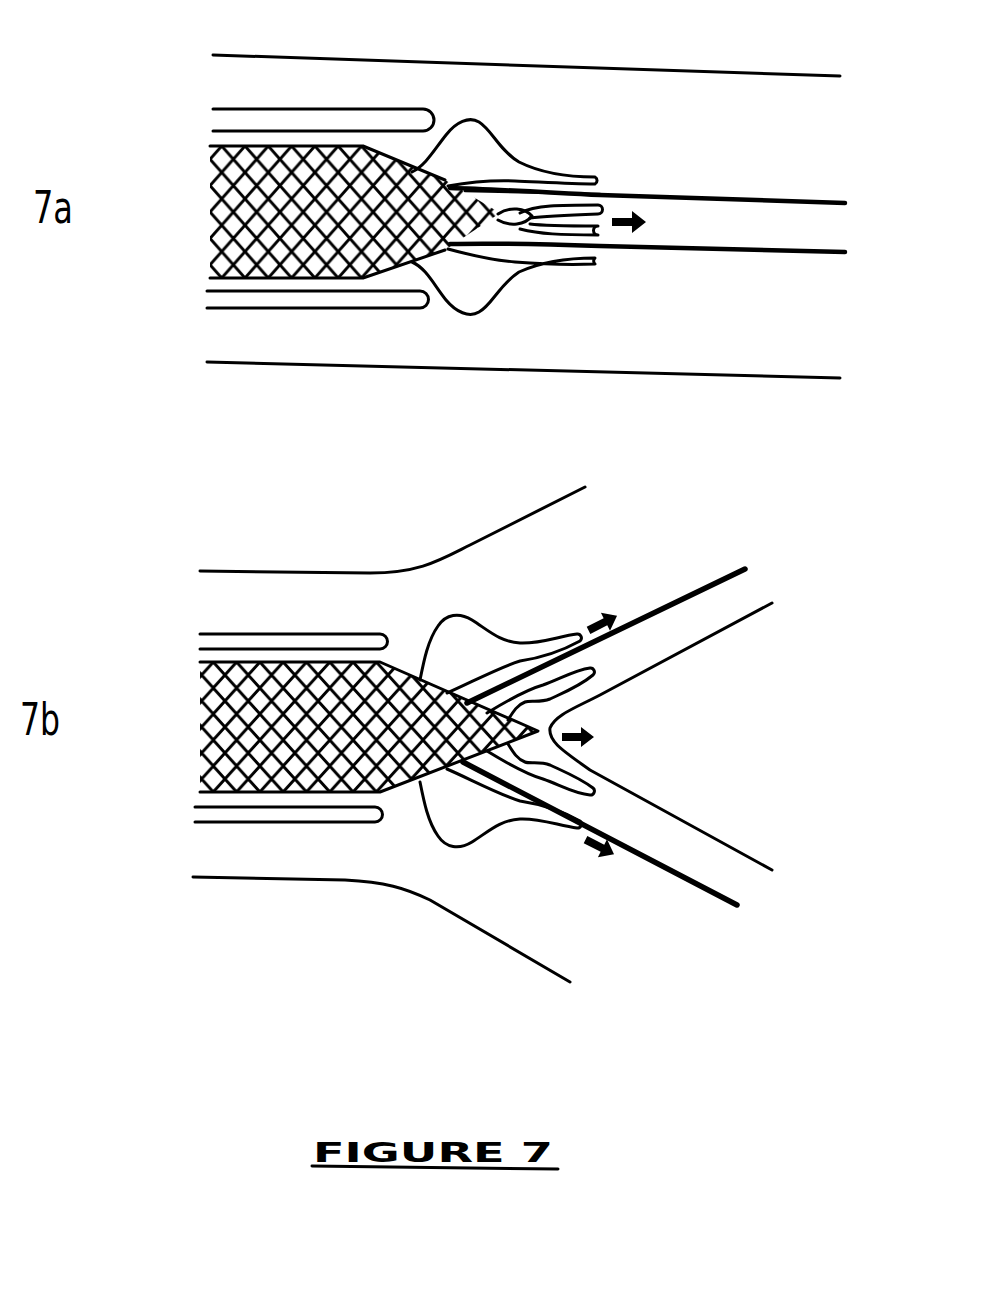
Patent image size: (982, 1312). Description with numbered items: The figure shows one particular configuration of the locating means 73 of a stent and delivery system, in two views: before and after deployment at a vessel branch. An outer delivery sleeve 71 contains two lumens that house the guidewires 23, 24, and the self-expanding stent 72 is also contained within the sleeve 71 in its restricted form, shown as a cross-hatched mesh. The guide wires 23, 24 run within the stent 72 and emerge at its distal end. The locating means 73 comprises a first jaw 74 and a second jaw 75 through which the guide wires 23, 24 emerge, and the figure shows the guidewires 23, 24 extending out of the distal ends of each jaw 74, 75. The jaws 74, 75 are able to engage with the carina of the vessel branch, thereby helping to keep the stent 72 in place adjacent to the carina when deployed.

The guidewire 23 is at (682, 196).
The guidewire 24 is at (665, 255).
The outer delivery sleeve 71 is at (350, 112).
The self-expanding stent 72 is at (210, 195).
The locating means 73 is at (528, 140).
The first jaw 74 is at (503, 624).
The second jaw 75 is at (487, 843).